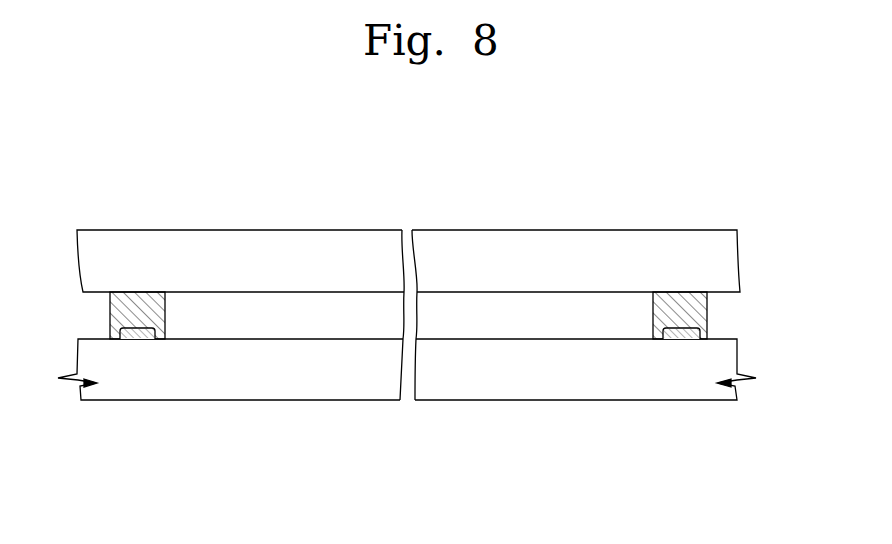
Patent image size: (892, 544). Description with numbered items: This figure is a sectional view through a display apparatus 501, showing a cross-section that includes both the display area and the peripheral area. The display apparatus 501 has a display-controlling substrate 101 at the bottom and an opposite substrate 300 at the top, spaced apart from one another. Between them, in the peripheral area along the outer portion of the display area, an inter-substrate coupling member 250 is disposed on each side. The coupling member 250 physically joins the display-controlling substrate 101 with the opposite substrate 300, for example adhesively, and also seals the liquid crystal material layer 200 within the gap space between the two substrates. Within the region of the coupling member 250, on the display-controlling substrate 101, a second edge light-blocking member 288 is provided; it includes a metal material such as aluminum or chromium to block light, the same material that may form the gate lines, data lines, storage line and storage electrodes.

The display apparatus 501 is at (693, 217).
The opposite substrate 300 is at (725, 262).
The inter-substrate coupling member 250 is at (708, 300).
The second edge light-blocking member 288 is at (710, 328).
The display-controlling substrate 101 is at (725, 360).
The liquid crystal material layer 200 is at (553, 328).